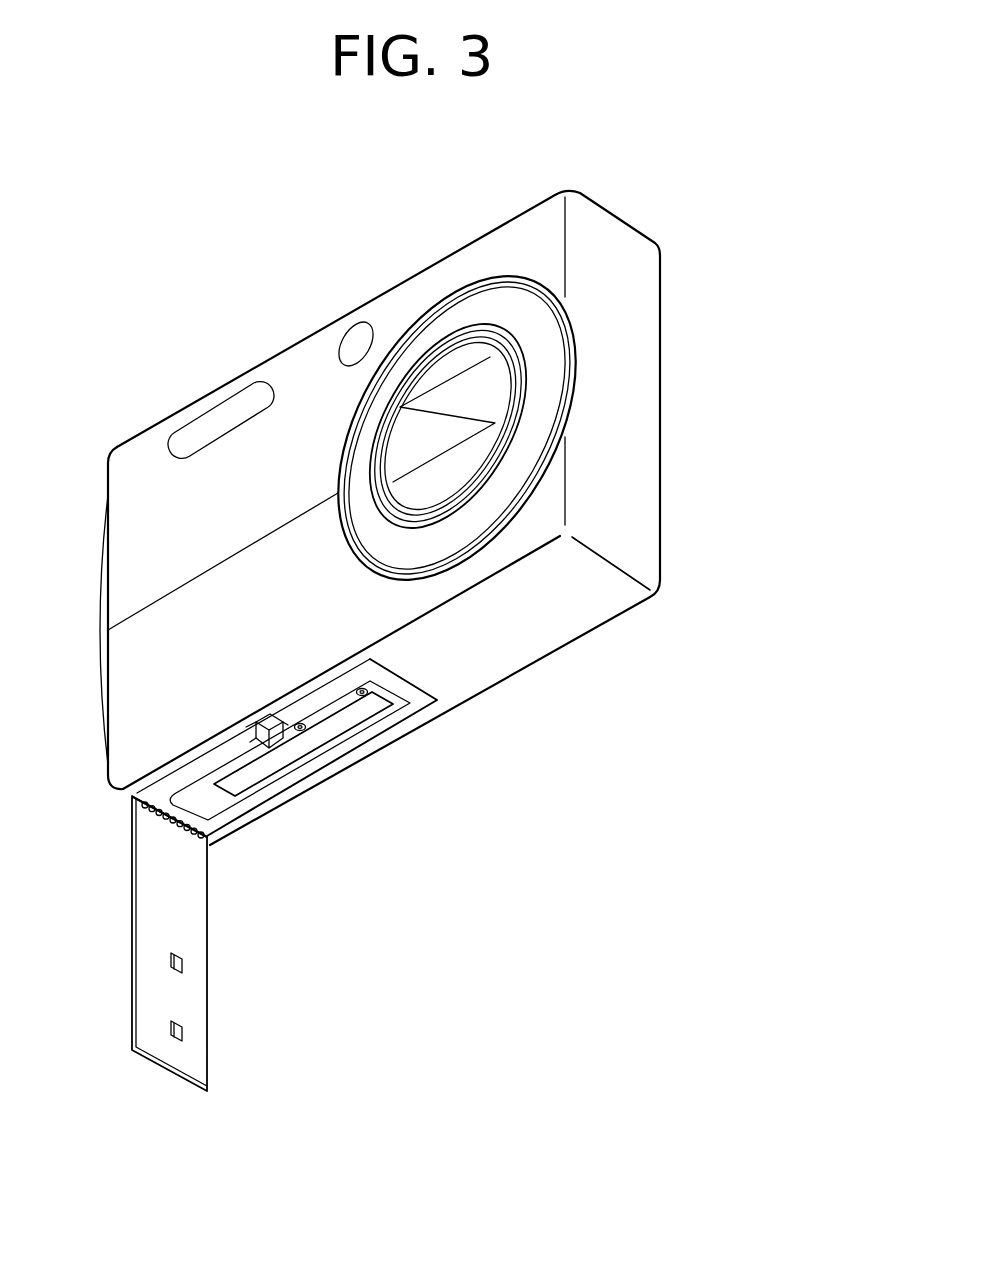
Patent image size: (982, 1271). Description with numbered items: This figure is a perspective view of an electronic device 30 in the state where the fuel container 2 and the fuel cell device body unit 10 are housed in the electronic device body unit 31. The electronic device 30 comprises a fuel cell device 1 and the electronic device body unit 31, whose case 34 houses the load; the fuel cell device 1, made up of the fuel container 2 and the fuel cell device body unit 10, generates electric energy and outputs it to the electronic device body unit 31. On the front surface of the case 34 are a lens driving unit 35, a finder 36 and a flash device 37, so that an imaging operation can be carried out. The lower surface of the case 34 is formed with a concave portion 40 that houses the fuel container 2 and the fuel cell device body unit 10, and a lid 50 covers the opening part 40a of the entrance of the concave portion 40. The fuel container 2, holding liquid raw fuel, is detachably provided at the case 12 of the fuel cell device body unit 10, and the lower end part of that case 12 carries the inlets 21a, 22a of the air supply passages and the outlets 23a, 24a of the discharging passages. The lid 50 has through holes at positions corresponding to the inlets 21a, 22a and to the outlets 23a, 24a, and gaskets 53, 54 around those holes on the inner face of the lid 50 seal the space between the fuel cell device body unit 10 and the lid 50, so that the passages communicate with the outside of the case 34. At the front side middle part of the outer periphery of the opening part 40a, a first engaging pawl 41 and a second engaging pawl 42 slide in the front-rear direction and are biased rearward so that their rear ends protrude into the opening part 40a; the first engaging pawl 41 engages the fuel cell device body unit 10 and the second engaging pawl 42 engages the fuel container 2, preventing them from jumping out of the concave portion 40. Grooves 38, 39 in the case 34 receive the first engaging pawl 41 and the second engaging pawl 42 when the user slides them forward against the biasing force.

The electronic device 30 is at (162, 242).
The electronic device body unit 31 is at (660, 275).
The case 34 is at (611, 563).
The lens driving unit 35 is at (543, 390).
The finder 36 is at (357, 322).
The flash device 37 is at (222, 398).
The groove 38 is at (257, 721).
The groove 39 is at (253, 730).
The concave portion 40 is at (214, 815).
The opening part 40a is at (403, 680).
The first engaging pawl 41 is at (277, 717).
The second engaging pawl 42 is at (250, 745).
The inlet 21a is at (303, 718).
The inlet 22a is at (300, 727).
The outlet 23a is at (372, 708).
The outlet 24a is at (362, 692).
The fuel container 2 is at (250, 763).
The fuel cell device body unit 10 is at (345, 712).
The case 12 is at (303, 744).
The fuel cell device 1 is at (293, 863).
The lid 50 is at (158, 884).
The gasket 53 is at (170, 958).
The gasket 54 is at (170, 1026).